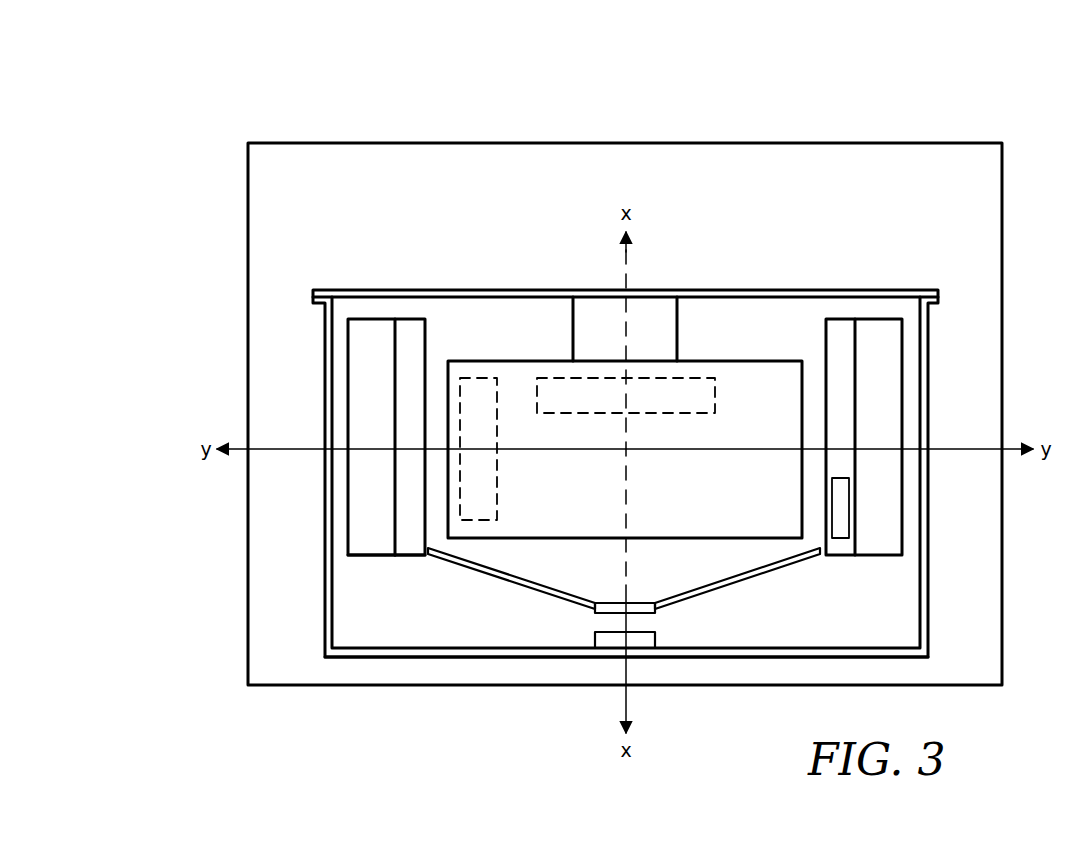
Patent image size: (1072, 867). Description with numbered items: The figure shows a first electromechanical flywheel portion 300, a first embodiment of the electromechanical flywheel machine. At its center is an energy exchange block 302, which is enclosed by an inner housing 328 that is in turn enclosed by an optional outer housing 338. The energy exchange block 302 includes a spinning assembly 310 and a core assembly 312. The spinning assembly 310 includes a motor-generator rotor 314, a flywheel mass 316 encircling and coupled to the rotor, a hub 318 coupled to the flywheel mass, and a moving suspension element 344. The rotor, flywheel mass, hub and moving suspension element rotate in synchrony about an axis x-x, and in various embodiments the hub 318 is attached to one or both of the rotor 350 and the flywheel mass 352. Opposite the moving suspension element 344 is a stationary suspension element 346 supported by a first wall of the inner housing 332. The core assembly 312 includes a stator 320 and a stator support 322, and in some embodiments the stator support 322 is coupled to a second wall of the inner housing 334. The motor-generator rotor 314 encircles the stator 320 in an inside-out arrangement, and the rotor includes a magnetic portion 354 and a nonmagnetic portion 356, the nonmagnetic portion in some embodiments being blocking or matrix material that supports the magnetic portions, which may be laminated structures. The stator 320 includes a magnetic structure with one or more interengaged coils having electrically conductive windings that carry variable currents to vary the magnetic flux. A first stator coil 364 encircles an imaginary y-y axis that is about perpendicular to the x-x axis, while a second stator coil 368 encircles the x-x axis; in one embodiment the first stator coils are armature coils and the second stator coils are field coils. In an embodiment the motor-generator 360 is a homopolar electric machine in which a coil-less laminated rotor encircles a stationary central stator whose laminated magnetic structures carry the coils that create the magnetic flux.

The first electromechanical flywheel portion 300 is at (196, 206).
The energy exchange block 302 is at (432, 218).
The spinning assembly 310 is at (434, 335).
The core assembly 312 is at (560, 348).
The motor-generator rotor 314 is at (405, 359).
The flywheel mass 316 is at (367, 400).
The hub 318 is at (500, 586).
The stator 320 is at (757, 518).
The stator support 322 is at (666, 322).
The inner housing 328 is at (323, 557).
The first wall of the inner housing 332 is at (487, 659).
The second wall of the inner housing 334 is at (348, 289).
The outer housing 338 is at (246, 614).
The moving suspension element 344 is at (594, 608).
The stationary suspension element 346 is at (652, 634).
The rotor 350 is at (425, 558).
The flywheel mass 352 is at (395, 558).
The magnetic portion 354 is at (848, 512).
The nonmagnetic portion 356 is at (848, 362).
The motor-generator 360 is at (822, 357).
The first stator coil 364 is at (497, 497).
The second stator coil 368 is at (712, 396).